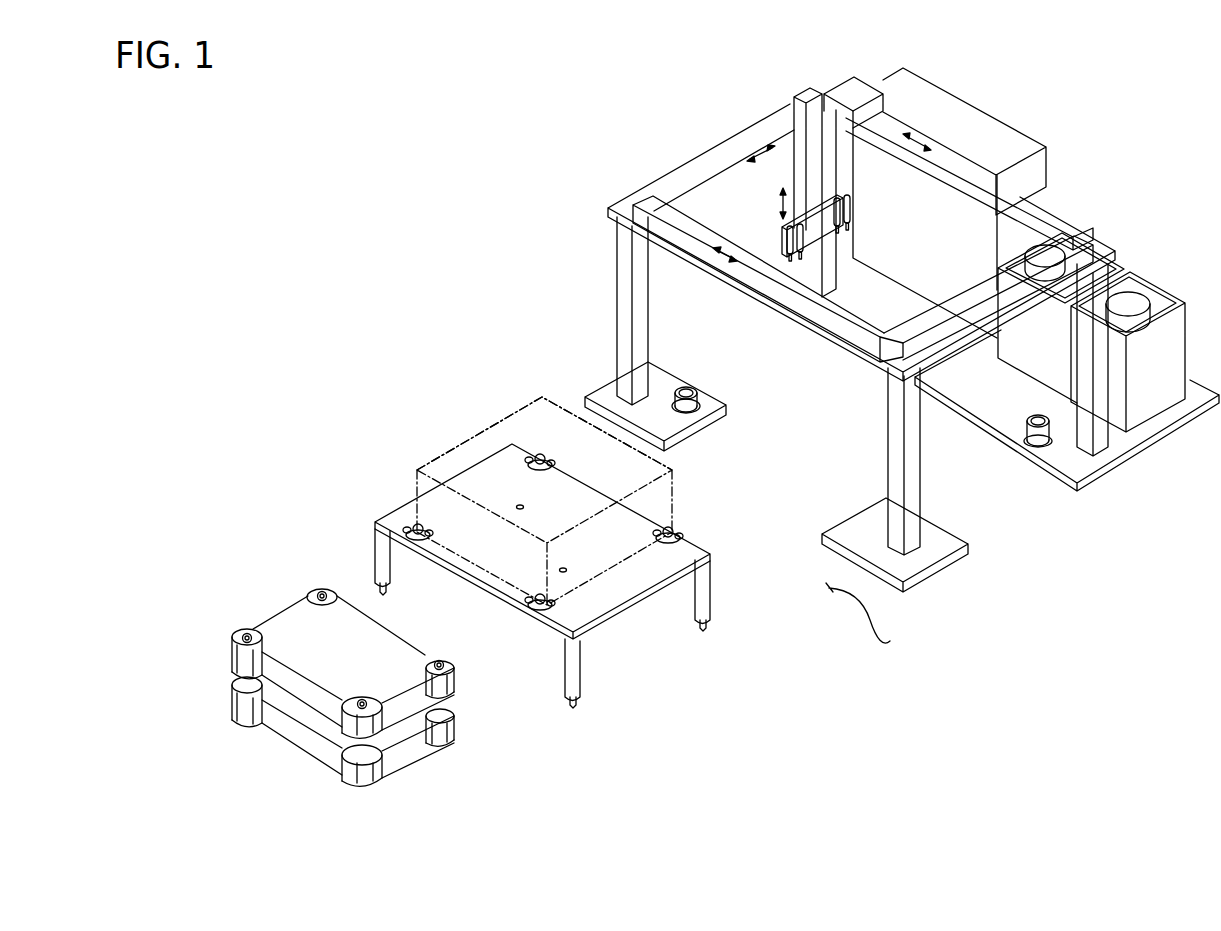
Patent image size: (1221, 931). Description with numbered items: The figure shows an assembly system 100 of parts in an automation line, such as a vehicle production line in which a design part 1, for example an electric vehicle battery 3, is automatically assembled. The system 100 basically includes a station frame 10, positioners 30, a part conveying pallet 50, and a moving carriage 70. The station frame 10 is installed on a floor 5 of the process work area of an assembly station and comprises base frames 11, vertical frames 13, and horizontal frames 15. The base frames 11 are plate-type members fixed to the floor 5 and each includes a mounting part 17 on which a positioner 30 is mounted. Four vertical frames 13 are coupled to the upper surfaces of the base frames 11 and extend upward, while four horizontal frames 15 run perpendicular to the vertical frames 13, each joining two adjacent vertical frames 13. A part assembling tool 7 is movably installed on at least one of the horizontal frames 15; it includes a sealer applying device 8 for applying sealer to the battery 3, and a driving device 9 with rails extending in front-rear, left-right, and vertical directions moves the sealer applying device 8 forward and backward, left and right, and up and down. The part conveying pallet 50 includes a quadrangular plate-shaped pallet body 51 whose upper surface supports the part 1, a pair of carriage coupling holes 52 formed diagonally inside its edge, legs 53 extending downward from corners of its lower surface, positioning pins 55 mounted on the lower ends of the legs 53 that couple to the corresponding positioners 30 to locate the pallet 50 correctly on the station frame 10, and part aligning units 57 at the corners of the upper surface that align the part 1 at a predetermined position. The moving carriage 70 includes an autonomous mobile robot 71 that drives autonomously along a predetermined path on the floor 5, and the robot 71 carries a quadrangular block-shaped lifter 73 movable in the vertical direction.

The part 1 is at (400, 440).
The electric vehicle battery 3 is at (455, 445).
The floor 5 is at (866, 620).
The part assembling tool 7 is at (762, 238).
The sealer applying device 8 is at (790, 262).
The driving device 9 is at (779, 120).
The station frame 10 is at (1104, 206).
The base frame 11 is at (603, 392).
The vertical frame 13 is at (622, 268).
The horizontal frame 15 is at (722, 152).
The mounting part 17 is at (700, 404).
The positioner 30 is at (689, 380).
The part conveying pallet 50 is at (531, 563).
The pallet body 51 is at (640, 585).
The carriage coupling hole 52 is at (520, 505).
The leg 53 is at (376, 560).
The positioning pin 55 is at (407, 597).
The part aligning unit 57 is at (530, 442).
The moving carriage 70 is at (307, 677).
The autonomous mobile robot 71 is at (240, 680).
The lifter 73 is at (270, 616).
The assembly system 100 is at (344, 244).